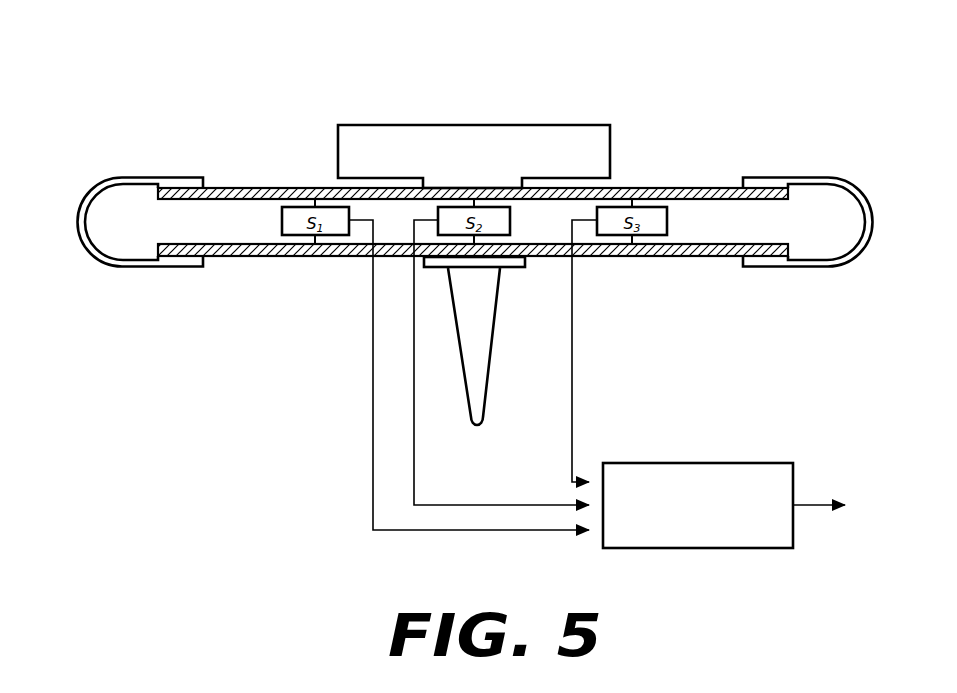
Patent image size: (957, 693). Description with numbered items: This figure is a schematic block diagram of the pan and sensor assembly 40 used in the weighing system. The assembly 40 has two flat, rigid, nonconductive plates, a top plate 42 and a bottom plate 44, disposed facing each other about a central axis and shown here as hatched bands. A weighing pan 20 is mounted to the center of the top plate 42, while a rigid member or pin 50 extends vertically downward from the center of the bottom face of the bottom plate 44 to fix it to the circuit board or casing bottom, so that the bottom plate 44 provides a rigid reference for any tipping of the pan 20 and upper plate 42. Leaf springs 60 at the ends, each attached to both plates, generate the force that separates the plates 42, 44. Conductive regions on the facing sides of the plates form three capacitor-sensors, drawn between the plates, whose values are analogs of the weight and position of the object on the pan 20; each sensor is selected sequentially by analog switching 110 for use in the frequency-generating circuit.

The weighing pan 20 is at (610, 125).
The pan and sensor assembly 40 is at (181, 72).
The top plate 42 is at (265, 188).
The bottom plate 44 is at (272, 257).
The rigid member or pin 50 is at (483, 373).
The leaf springs 60 is at (86, 190).
The analog switching 110 is at (688, 463).